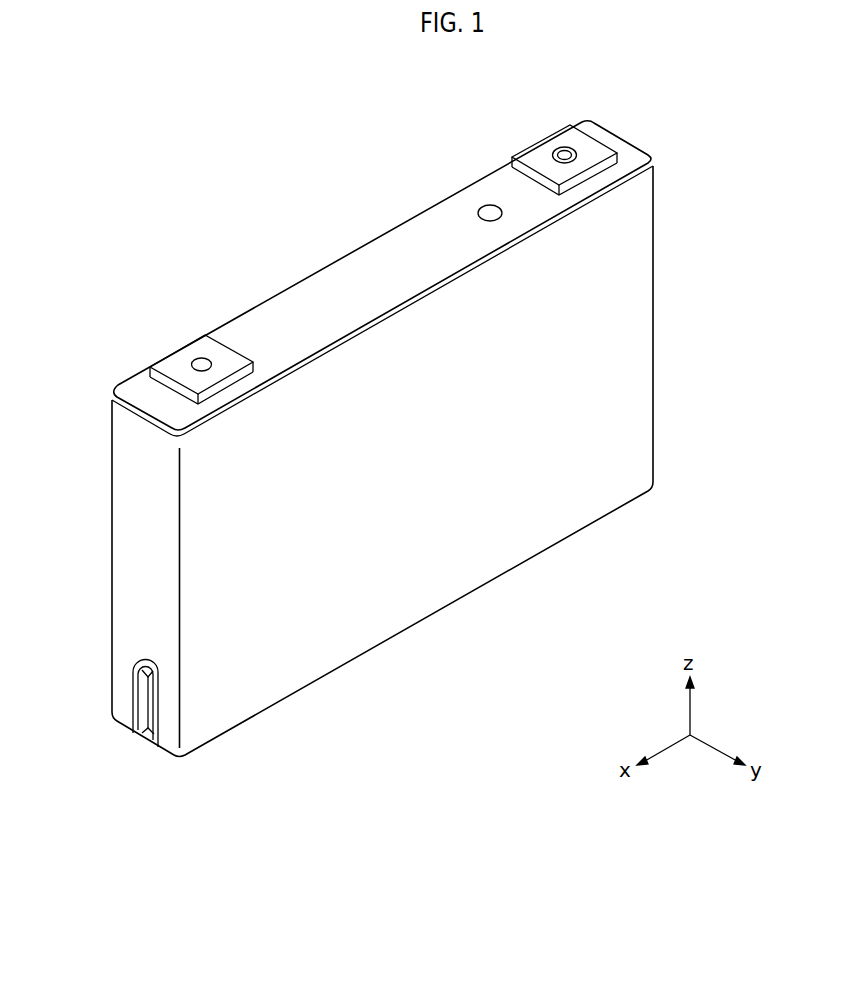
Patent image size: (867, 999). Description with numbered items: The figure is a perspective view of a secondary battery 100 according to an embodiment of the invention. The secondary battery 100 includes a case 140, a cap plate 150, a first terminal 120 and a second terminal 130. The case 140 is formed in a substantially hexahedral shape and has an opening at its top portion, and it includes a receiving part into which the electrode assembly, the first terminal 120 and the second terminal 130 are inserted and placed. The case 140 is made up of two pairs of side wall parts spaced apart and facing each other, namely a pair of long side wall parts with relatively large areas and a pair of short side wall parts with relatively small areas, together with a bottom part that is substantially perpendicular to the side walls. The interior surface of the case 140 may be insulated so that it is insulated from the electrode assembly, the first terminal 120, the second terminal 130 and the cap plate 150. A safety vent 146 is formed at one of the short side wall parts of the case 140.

The secondary battery 100 is at (98, 138).
The first terminal 120 is at (185, 353).
The second terminal 130 is at (548, 145).
The case 140 is at (640, 313).
The safety vent 146 is at (143, 739).
The cap plate 150 is at (358, 244).